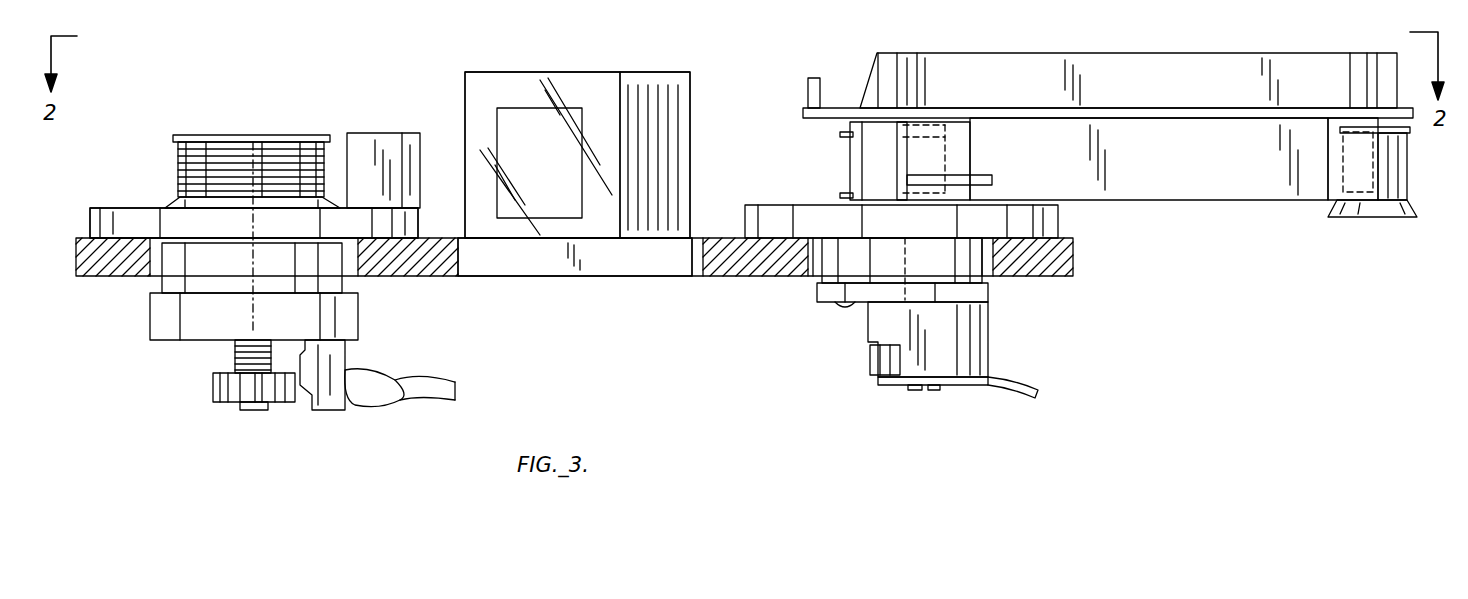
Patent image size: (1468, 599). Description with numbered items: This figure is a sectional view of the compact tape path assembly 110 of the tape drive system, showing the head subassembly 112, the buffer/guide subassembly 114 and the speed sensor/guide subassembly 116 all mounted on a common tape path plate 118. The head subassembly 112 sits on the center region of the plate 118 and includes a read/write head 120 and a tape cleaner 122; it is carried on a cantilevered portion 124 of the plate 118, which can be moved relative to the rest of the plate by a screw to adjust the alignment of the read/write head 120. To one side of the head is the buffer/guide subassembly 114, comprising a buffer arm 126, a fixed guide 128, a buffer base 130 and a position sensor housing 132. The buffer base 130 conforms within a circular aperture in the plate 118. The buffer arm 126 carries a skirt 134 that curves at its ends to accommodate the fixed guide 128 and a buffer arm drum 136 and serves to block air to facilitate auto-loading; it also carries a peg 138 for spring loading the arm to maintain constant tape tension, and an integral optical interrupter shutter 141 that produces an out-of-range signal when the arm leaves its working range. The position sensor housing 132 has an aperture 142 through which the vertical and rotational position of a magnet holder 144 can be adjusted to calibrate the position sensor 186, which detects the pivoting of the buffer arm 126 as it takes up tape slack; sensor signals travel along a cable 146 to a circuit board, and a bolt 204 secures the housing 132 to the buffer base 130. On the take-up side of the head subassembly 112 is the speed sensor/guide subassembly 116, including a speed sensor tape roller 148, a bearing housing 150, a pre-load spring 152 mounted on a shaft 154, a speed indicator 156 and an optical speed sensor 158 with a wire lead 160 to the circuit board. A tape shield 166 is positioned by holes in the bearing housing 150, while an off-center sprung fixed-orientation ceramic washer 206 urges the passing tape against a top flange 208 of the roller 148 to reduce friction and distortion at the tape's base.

The tape path assembly 110 is at (1298, 314).
The head subassembly 112 is at (658, 58).
The buffer/guide subassembly 114 is at (1050, 47).
The speed sensor/guide subassembly 116 is at (305, 110).
The tape path plate 118 is at (440, 277).
The read/write head 120 is at (517, 108).
The tape cleaner 122 is at (676, 115).
The cantilevered portion 124 is at (612, 265).
The buffer arm 126 is at (1233, 100).
The fixed guide 128 is at (840, 161).
The buffer base 130 is at (965, 270).
The position sensor housing 132 is at (990, 318).
The skirt 134 is at (1125, 170).
The buffer arm drum 136 is at (1408, 180).
The peg 138 is at (823, 78).
The optical interrupter shutter 141 is at (980, 175).
The aperture 142 is at (858, 390).
The magnet holder 144 is at (870, 363).
The cable 146 is at (1030, 390).
The speed sensor tape roller 148 is at (178, 160).
The bearing housing 150 is at (150, 313).
The pre-load spring 152 is at (235, 352).
The shaft 154 is at (253, 135).
The speed indicator 156 is at (213, 388).
The optical speed sensor 158 is at (322, 410).
The wire lead 160 is at (410, 380).
The tape shield 166 is at (388, 133).
The position sensor 186 is at (978, 415).
The bolt 204 is at (845, 305).
The ceramic washer 206 is at (175, 200).
The top flange 208 is at (178, 137).